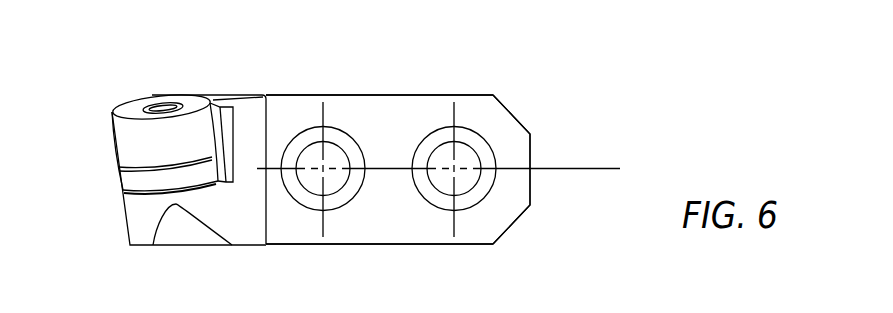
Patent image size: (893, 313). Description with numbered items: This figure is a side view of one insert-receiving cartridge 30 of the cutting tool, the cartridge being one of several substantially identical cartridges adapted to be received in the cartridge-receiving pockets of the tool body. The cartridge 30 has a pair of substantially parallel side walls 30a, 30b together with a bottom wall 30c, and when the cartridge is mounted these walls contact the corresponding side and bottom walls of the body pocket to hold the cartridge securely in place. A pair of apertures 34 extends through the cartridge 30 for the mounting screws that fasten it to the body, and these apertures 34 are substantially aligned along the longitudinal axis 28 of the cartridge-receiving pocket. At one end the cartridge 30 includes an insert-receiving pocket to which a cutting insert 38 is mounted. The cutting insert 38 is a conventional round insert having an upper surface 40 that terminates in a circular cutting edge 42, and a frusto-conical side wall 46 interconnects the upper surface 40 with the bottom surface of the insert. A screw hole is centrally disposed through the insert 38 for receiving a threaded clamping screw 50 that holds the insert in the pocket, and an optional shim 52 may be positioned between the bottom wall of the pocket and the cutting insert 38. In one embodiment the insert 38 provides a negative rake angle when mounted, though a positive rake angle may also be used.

The longitudinal axis 28 is at (602, 168).
The insert-receiving cartridge 30 is at (498, 83).
The side wall 30a is at (348, 246).
The side wall 30b is at (386, 95).
The bottom wall 30c is at (533, 143).
The apertures 34 is at (301, 156).
The cutting insert 38 is at (146, 127).
The upper surface 40 is at (133, 107).
The circular cutting edge 42 is at (112, 112).
The frusto-conical side wall 46 is at (117, 147).
The threaded clamping screw 50 is at (168, 108).
The shim 52 is at (122, 181).